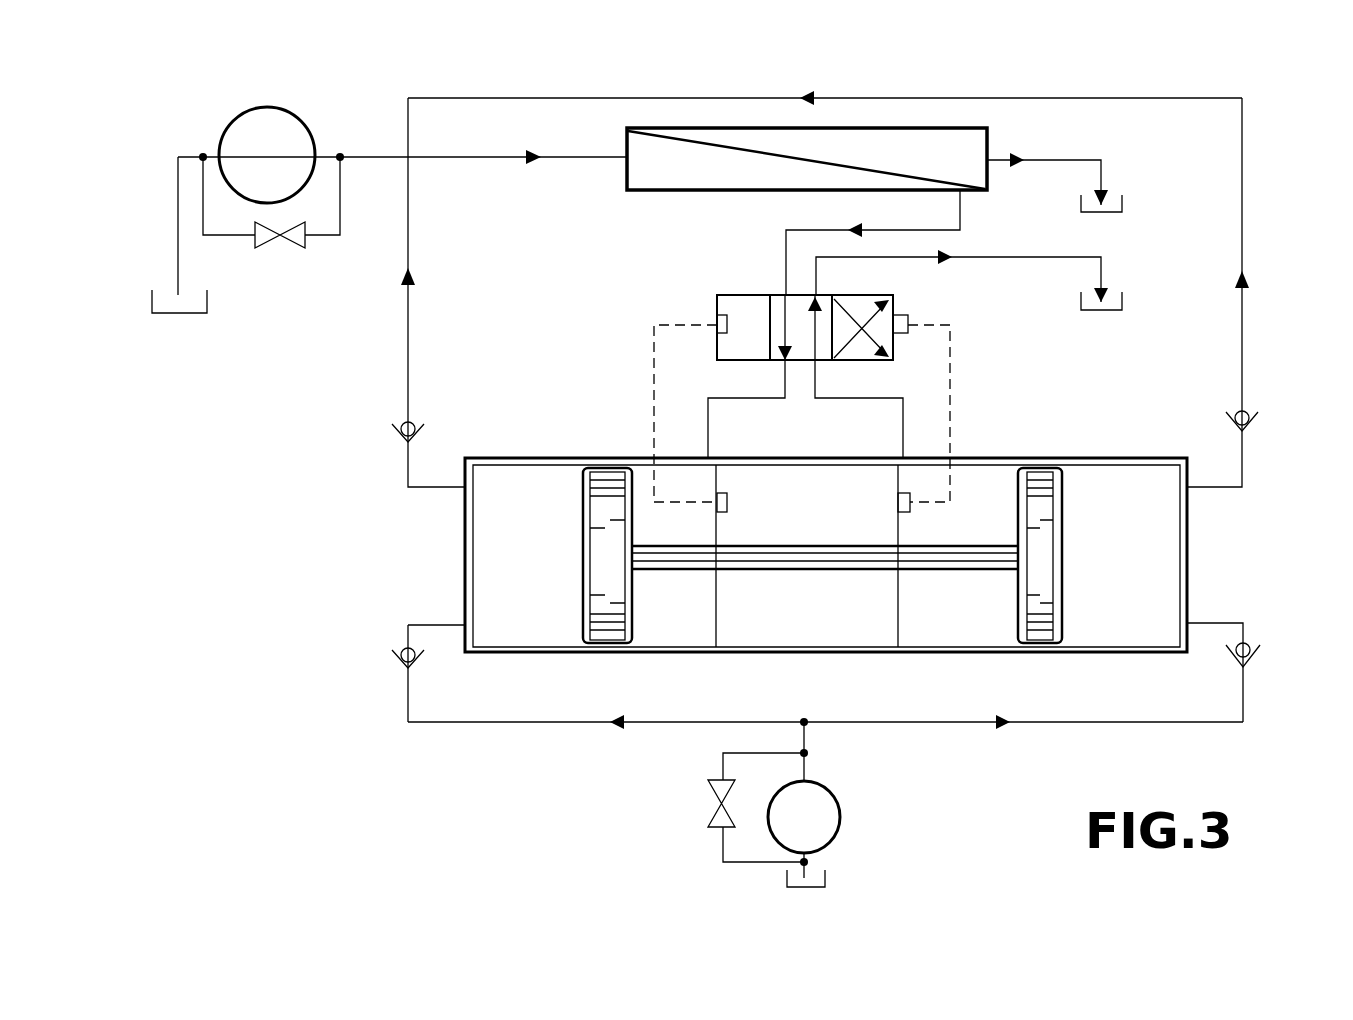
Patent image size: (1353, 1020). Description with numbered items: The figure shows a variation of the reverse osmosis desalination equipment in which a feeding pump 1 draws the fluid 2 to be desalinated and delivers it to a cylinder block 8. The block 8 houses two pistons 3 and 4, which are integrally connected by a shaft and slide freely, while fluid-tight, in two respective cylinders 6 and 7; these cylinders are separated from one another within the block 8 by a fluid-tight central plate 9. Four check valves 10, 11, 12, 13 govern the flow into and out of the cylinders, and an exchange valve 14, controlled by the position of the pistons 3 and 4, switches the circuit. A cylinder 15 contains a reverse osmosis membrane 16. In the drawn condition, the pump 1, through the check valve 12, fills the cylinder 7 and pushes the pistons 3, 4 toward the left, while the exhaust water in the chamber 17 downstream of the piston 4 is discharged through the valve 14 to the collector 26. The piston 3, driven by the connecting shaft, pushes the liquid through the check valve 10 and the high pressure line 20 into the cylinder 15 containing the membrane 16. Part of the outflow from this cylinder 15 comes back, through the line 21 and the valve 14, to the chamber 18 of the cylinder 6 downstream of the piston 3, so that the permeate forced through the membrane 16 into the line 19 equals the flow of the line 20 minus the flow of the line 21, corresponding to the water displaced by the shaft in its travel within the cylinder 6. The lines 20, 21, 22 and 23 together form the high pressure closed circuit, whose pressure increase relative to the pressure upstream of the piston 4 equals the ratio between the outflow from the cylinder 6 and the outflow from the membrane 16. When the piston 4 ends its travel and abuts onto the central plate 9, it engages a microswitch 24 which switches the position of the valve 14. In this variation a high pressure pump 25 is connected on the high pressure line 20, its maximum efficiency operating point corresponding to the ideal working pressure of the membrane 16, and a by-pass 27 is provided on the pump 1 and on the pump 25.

The feeding pump 1 is at (815, 812).
The fluid to be desalinated 2 is at (812, 878).
The piston 3 is at (608, 557).
The piston 4 is at (1045, 541).
The cylinder 6 is at (532, 458).
The cylinder 7 is at (1115, 460).
The cylinder block 8 is at (1042, 430).
The central plate 9 is at (858, 630).
The check valve 10 is at (402, 437).
The check valve 11 is at (400, 657).
The check valve 12 is at (1248, 643).
The check valve 13 is at (1246, 407).
The exchange valve 14 is at (900, 296).
The cylinder 15 is at (652, 193).
The reverse osmosis membrane 16 is at (720, 152).
The chamber 17 is at (977, 482).
The chamber 18 is at (672, 632).
The line 19 is at (1083, 158).
The high pressure line 20 is at (457, 158).
The line 21 is at (962, 210).
The line 22 is at (408, 347).
The line 23 is at (708, 437).
The microswitch 24 is at (902, 508).
The high pressure pump 25 is at (295, 138).
The collector 26 is at (1108, 307).
The by-pass 27 is at (295, 235).